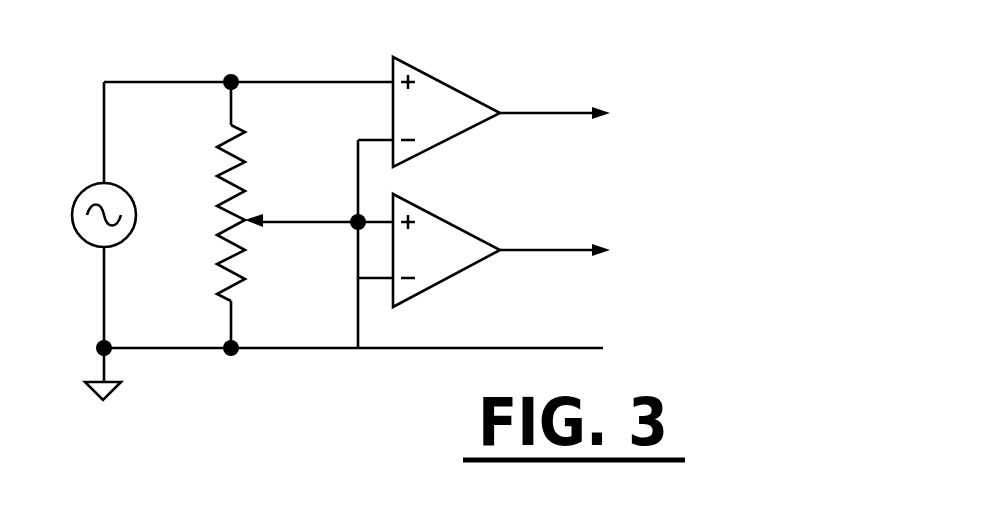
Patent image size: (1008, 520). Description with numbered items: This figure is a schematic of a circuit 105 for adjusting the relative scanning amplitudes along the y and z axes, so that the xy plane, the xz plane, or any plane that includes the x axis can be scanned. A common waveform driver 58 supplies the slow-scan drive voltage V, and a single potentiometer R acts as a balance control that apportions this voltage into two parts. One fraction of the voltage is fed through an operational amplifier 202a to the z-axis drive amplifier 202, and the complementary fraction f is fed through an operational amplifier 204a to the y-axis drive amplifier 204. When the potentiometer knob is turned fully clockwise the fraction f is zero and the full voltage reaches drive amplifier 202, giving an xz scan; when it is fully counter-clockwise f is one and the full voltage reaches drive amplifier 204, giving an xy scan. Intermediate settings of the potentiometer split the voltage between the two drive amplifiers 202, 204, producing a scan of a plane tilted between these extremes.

The circuit 105 is at (318, 62).
The common waveform driver 58 is at (120, 246).
The operational amplifier 202a is at (440, 78).
The operational amplifier 204a is at (440, 283).
The drive amplifier 202 is at (733, 96).
The drive amplifier 204 is at (757, 238).